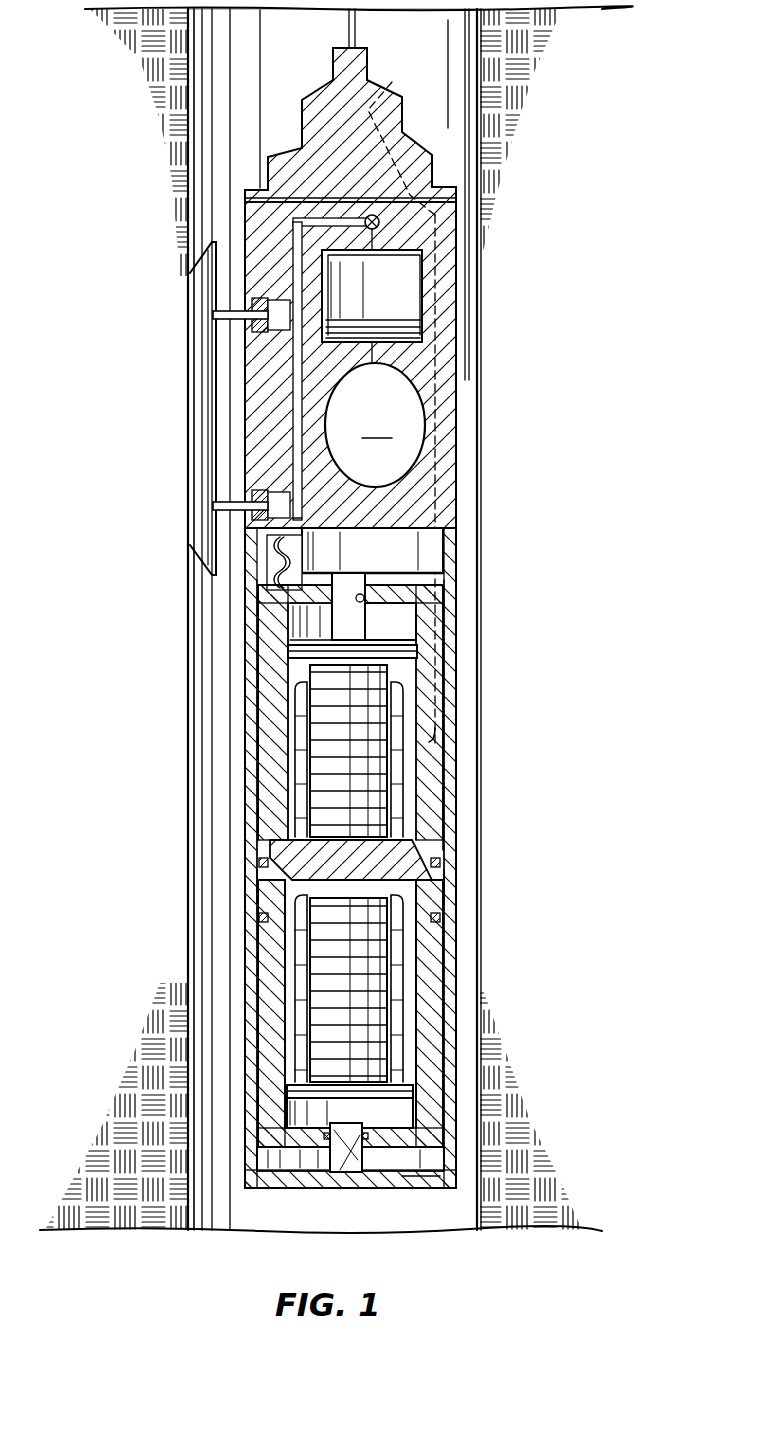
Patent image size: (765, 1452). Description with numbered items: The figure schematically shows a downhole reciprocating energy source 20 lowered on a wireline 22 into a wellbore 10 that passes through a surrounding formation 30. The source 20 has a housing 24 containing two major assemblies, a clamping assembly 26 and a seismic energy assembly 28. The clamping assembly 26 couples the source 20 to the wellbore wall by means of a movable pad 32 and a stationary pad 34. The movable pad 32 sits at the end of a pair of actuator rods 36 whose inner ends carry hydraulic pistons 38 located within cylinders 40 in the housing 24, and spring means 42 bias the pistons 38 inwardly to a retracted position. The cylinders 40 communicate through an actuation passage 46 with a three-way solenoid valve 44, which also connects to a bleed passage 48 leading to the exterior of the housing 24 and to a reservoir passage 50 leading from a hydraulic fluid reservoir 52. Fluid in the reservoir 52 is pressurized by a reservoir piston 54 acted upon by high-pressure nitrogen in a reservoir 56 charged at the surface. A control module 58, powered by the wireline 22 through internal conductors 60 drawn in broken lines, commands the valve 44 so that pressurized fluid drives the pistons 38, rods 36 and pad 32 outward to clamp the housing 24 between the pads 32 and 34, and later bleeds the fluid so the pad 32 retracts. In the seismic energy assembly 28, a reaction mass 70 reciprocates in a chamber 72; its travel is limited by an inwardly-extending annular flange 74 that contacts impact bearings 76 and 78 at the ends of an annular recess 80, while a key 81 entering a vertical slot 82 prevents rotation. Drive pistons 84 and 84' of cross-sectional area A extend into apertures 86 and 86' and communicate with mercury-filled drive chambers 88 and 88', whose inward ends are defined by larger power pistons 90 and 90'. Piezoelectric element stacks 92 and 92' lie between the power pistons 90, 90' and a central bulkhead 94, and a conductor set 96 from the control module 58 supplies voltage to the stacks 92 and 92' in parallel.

The wellbore 10 is at (541, 103).
The reciprocating energy source 20 is at (447, 172).
The wireline 22 is at (366, 35).
The housing 24 is at (458, 612).
The clamping assembly 26 is at (262, 248).
The seismic energy assembly 28 is at (441, 827).
The formation 30 is at (686, 501).
The movable pad 32 is at (205, 465).
The stationary pad 34 is at (470, 380).
The actuator rods 36 is at (213, 380).
The hydraulic pistons 38 is at (258, 300).
The cylinders 40 is at (375, 425).
The spring means 42 is at (225, 303).
The three-way solenoid valve 44 is at (382, 218).
The actuation passage 46 is at (300, 222).
The bleed passage 48 is at (318, 212).
The reservoir passage 50 is at (420, 262).
The hydraulic fluid reservoir 52 is at (410, 292).
The reservoir piston 54 is at (422, 325).
The nitrogen reservoir 56 is at (410, 460).
The control module 58 is at (422, 552).
The internal conductors 60 is at (392, 82).
The reaction mass 70 is at (428, 958).
The chamber 72 is at (422, 1160).
The annular flange 74 is at (442, 900).
The impact bearing 76 is at (262, 867).
The impact bearing 78 is at (262, 922).
The annular recess 80 is at (257, 896).
The key 81 is at (440, 736).
The vertical slot 82 is at (445, 718).
The drive piston 84 is at (353, 608).
The drive piston 84' is at (373, 1199).
The aperture 86 is at (452, 628).
The aperture 86' is at (319, 1204).
The drive chamber 88 is at (285, 712).
The drive chamber 88' is at (428, 1113).
The power piston 90 is at (418, 669).
The power piston 90' is at (429, 1073).
The piezoelectric element stack 92 is at (421, 751).
The piezoelectric element stack 92' is at (265, 988).
The bulkhead 94 is at (317, 845).
The conductor set 96 is at (276, 563).
The cross-sectional area A is at (414, 1183).